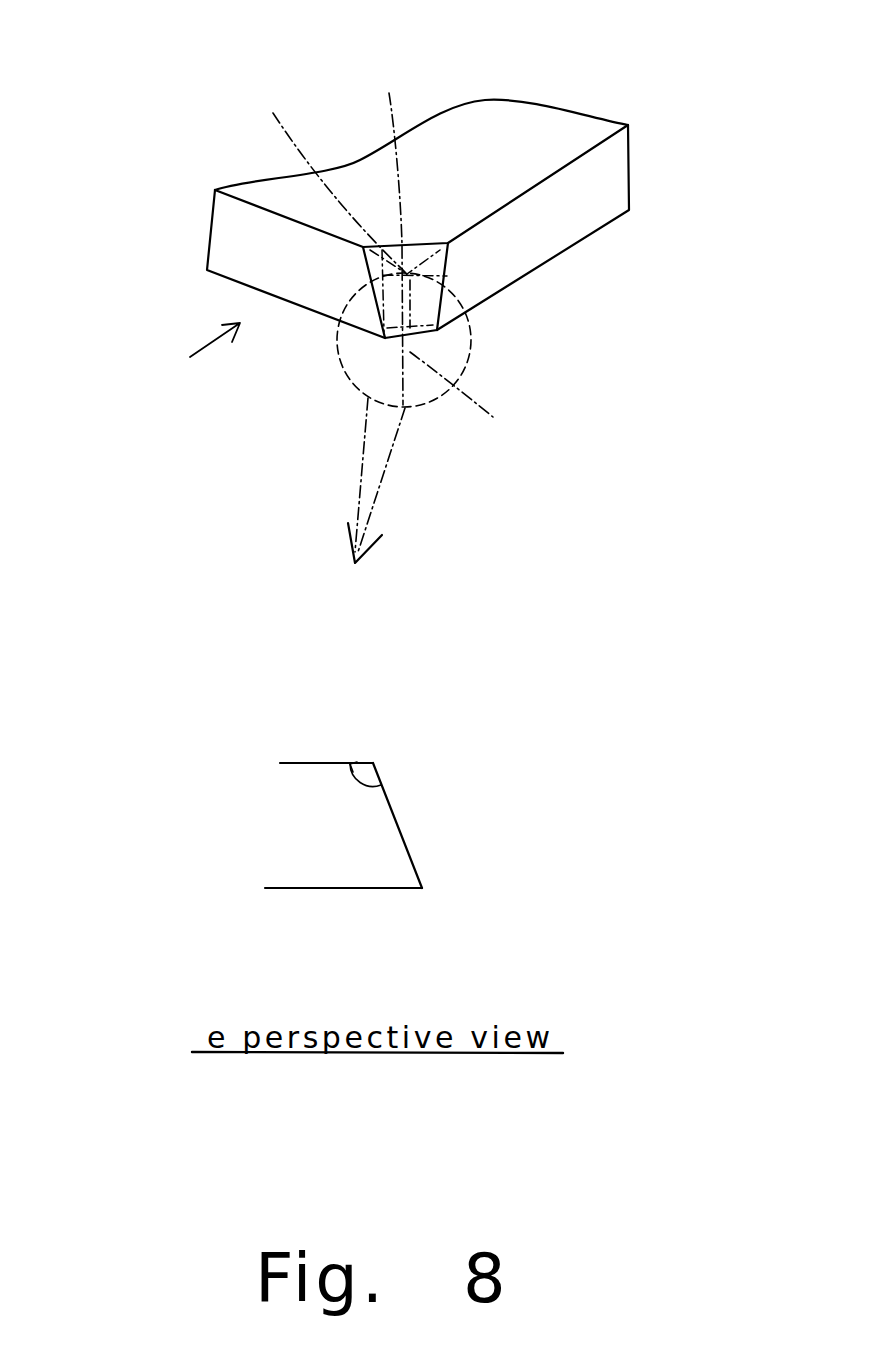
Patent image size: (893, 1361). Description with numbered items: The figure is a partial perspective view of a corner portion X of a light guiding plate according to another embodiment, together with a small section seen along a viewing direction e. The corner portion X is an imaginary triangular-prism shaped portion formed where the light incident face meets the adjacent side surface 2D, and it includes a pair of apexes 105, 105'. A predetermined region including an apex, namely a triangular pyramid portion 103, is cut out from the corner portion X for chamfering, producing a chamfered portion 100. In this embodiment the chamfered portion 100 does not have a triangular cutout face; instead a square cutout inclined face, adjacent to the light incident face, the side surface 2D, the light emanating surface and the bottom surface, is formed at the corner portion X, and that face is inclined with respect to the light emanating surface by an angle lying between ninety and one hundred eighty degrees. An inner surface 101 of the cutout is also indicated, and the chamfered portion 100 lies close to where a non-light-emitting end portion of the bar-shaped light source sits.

The side surface 2D is at (612, 171).
The chamfered portion 100 is at (375, 348).
The inner wall surface of the notch 101 is at (410, 280).
The triangular pyramid portion 103 is at (472, 406).
The apex 105 is at (419, 480).
The apex 105' is at (320, 170).
The corner portion X is at (385, 229).
The viewing direction e is at (202, 353).